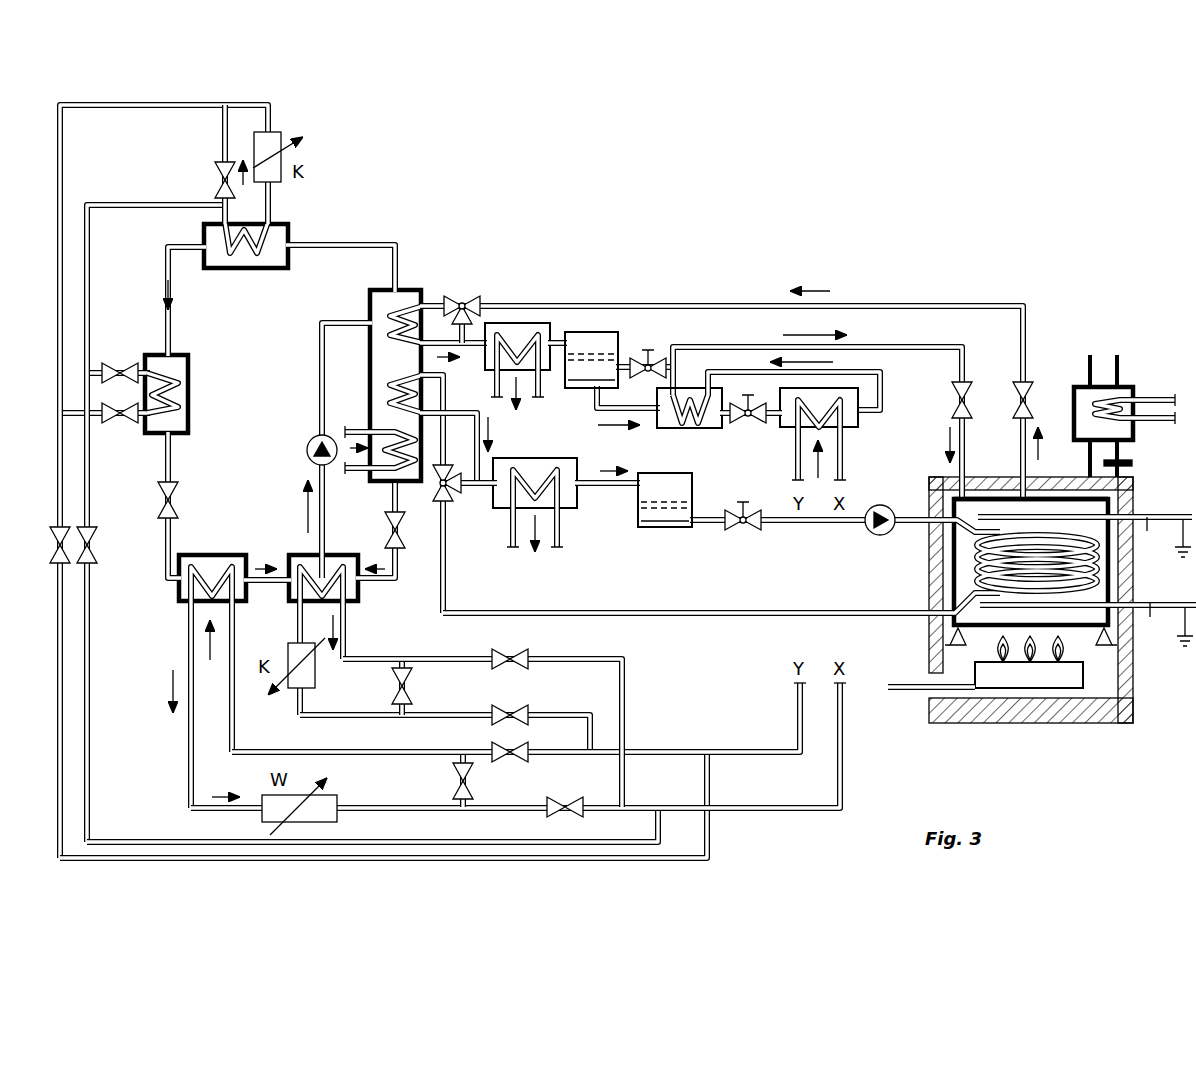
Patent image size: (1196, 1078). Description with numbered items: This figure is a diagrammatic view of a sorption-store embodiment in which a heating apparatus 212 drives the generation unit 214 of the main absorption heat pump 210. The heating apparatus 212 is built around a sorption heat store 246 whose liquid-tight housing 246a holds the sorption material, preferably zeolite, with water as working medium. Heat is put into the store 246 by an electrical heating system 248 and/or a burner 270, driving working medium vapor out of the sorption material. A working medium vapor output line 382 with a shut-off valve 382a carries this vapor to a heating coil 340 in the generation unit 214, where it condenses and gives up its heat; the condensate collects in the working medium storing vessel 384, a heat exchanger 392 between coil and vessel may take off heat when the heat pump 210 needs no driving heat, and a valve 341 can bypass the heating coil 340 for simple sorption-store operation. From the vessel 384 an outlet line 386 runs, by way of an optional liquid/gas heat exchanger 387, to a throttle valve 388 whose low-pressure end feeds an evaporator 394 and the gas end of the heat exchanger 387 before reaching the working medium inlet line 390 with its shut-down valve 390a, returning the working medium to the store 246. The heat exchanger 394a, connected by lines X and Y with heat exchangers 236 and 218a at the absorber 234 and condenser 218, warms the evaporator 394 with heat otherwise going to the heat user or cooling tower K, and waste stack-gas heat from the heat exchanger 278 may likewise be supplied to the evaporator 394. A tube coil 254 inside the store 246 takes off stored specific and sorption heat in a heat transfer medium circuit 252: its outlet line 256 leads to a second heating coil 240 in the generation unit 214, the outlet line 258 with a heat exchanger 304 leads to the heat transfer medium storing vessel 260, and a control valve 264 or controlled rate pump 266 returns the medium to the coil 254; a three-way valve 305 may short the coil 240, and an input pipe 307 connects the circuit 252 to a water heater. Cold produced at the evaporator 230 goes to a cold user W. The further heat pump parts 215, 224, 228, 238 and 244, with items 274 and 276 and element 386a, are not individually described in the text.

The heat pump 210 is at (165, 388).
The heating apparatus 212 is at (763, 270).
The generation unit 214 is at (412, 285).
The heat exchanger coil 215 is at (362, 470).
The condenser 218 is at (292, 226).
The heat exchanger 218a is at (222, 228).
The valve 224 is at (178, 500).
The heat exchanger 228 is at (222, 552).
The evaporator 230 is at (233, 585).
The absorber 234 is at (360, 585).
The heat exchanger 236 is at (345, 615).
The pump 238 is at (308, 443).
The heating coil 240 is at (390, 393).
The valve 244 is at (385, 530).
The sorption heat store 246 is at (955, 573).
The liquid-tight housing 246a is at (1110, 497).
The electrical heating system 248 is at (1087, 595).
The heat transfer medium circuit 252 is at (759, 671).
The tube coil 254 is at (1098, 568).
The outlet line 256 is at (505, 612).
The outlet line 258 is at (475, 440).
The heat transfer medium storing vessel 260 is at (668, 528).
The control valve 264 is at (745, 531).
The controlled rate pump 266 is at (900, 500).
The burner 270 is at (1064, 688).
The flue duct 274 is at (1119, 455).
The damper 276 is at (1132, 464).
The heat exchanger 278 is at (1125, 386).
The heat exchanger 304 is at (540, 457).
The three-way valve 305 is at (446, 518).
The input pipe 307 is at (452, 492).
The heating coil 340 is at (392, 346).
The valve 341 is at (465, 296).
The working medium vapor output line 382 is at (942, 303).
The shut-off valve 382a is at (1027, 384).
The working medium storing vessel 384 is at (600, 332).
The outlet line 386 is at (597, 398).
The valve 386a is at (655, 356).
The liquid/gas heat exchanger 387 is at (708, 430).
The throttle valve 388 is at (746, 425).
The working medium inlet line 390 is at (952, 345).
The shut-down valve 390a is at (950, 395).
The heat exchanger 392 is at (518, 322).
The evaporator 394 is at (858, 420).
The heat exchanger 394a is at (838, 445).